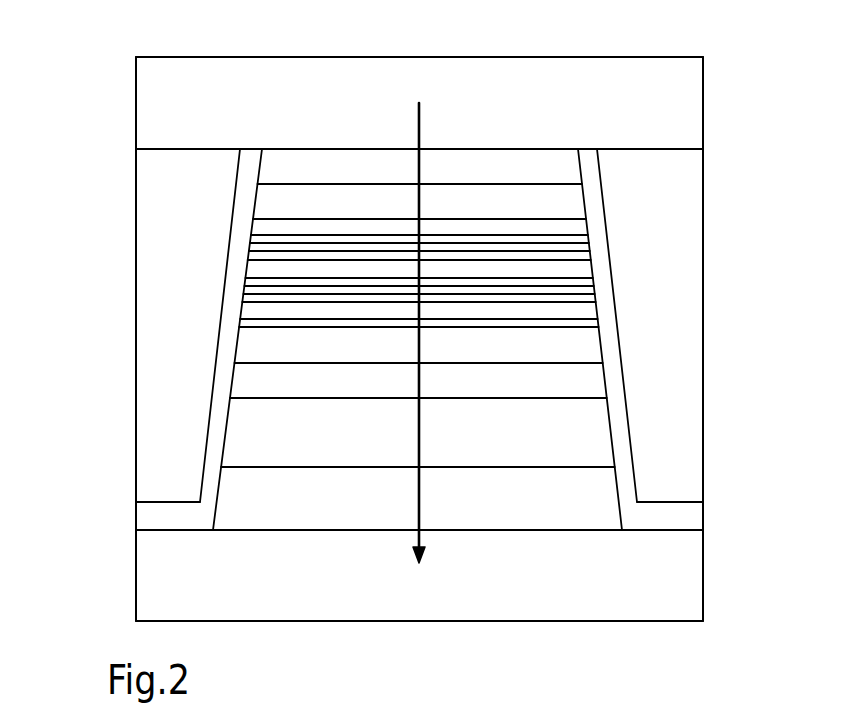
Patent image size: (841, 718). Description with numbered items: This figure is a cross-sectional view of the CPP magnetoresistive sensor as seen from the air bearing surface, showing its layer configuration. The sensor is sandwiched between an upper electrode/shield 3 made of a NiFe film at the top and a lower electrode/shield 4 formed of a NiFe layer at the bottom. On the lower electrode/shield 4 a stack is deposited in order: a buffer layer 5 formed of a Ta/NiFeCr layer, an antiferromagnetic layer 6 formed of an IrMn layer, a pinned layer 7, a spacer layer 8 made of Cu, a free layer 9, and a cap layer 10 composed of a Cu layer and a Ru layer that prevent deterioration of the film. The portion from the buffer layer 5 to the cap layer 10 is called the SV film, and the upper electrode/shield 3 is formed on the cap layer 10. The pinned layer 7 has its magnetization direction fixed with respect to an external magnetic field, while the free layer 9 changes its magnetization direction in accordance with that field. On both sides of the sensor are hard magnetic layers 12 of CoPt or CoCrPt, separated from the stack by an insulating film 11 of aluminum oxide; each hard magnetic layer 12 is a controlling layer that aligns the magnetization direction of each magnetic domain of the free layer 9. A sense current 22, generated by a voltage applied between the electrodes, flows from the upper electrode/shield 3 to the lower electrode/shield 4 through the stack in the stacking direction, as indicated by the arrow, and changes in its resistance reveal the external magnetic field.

The upper electrode/shield 3 is at (548, 80).
The lower electrode/shield 4 is at (562, 582).
The buffer layer 5 is at (709, 468).
The antiferromagnetic layer 6 is at (709, 401).
The pinned layer 7 is at (709, 367).
The spacer layer 8 is at (709, 331).
The free layer 9 is at (709, 220).
The cap layer 10 is at (709, 155).
The insulating film 11 is at (155, 515).
The hard magnetic layer 12 is at (156, 250).
The sense current 22 is at (420, 135).